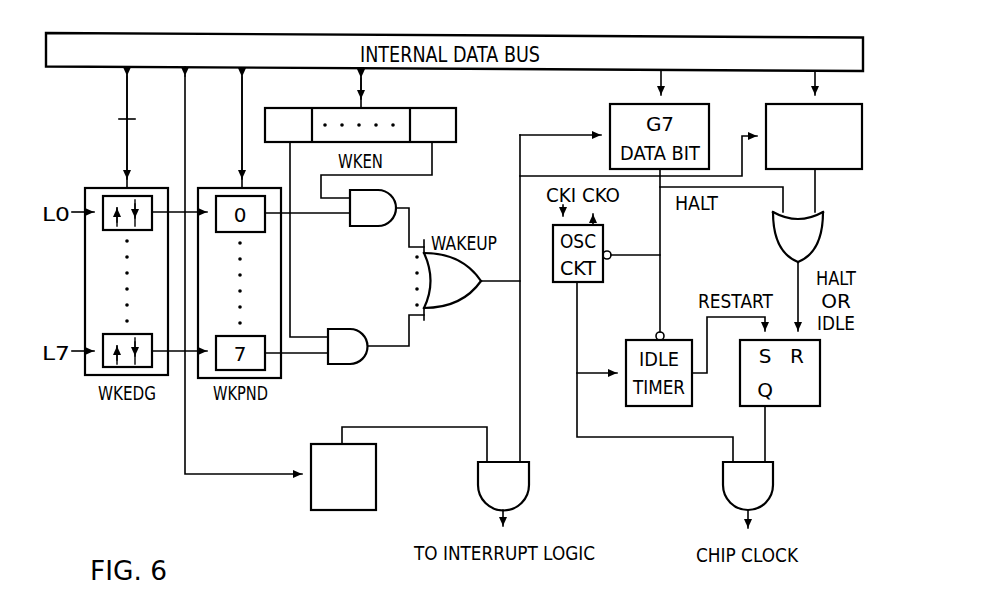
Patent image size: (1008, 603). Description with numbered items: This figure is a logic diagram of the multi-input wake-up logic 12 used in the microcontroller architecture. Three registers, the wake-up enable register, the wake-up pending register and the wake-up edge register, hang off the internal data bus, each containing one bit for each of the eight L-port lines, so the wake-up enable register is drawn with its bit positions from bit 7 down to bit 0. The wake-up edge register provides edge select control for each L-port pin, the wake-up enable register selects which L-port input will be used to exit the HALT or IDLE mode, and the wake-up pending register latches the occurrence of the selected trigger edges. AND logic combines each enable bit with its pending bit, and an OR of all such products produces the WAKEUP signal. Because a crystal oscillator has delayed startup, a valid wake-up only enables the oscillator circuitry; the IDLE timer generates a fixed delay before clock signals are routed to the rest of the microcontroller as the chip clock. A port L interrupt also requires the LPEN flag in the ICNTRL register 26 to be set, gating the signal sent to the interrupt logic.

The multi-input wake-up logic 12 is at (877, 200).
The ICNTRL register 26 is at (373, 487).
The WKEN register bit 7 is at (288, 125).
The WKEN register bit 0 is at (433, 125).